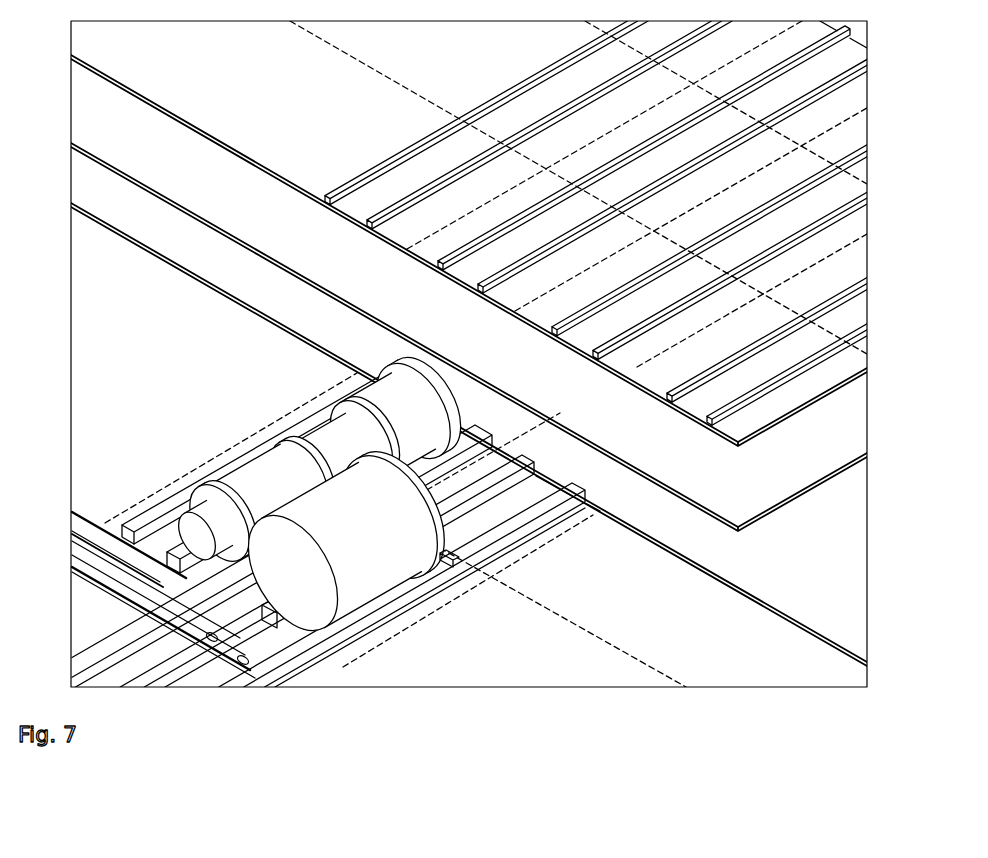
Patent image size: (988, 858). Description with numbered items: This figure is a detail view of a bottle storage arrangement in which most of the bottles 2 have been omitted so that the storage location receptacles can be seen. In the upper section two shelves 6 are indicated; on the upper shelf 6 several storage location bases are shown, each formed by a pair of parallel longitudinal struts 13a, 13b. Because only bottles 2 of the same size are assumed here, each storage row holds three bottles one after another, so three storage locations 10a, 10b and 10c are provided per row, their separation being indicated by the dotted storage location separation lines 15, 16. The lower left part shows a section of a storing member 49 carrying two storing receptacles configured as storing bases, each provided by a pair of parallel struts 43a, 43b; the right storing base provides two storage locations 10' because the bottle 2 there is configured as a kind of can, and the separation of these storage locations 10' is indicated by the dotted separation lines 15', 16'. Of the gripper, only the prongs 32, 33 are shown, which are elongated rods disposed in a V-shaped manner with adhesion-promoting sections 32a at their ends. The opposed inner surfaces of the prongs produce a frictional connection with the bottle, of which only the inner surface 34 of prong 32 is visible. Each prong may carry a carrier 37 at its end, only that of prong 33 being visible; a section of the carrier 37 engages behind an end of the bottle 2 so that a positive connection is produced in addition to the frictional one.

The bottle 2 is at (354, 527).
The shelf 6 is at (814, 386).
The storage location 10a is at (608, 315).
The storage location 10b is at (783, 262).
The storage location 10c is at (838, 141).
The storage location 10' is at (430, 628).
The longitudinal strut 13a is at (810, 187).
The longitudinal strut 13b is at (828, 220).
The storage location separation line 15 is at (752, 347).
The storage location separation line 15' is at (468, 631).
The storage location separation line 16 is at (578, 232).
The storage location separation line 16' is at (563, 648).
The prong 32 is at (78, 548).
The adhesion-promoting section 32a is at (188, 567).
The prong 33 is at (310, 658).
The inner surface 34 is at (112, 535).
The carrier 37 is at (448, 566).
The strut 43a is at (523, 477).
The strut 43b is at (508, 543).
The storing member 49 is at (698, 633).